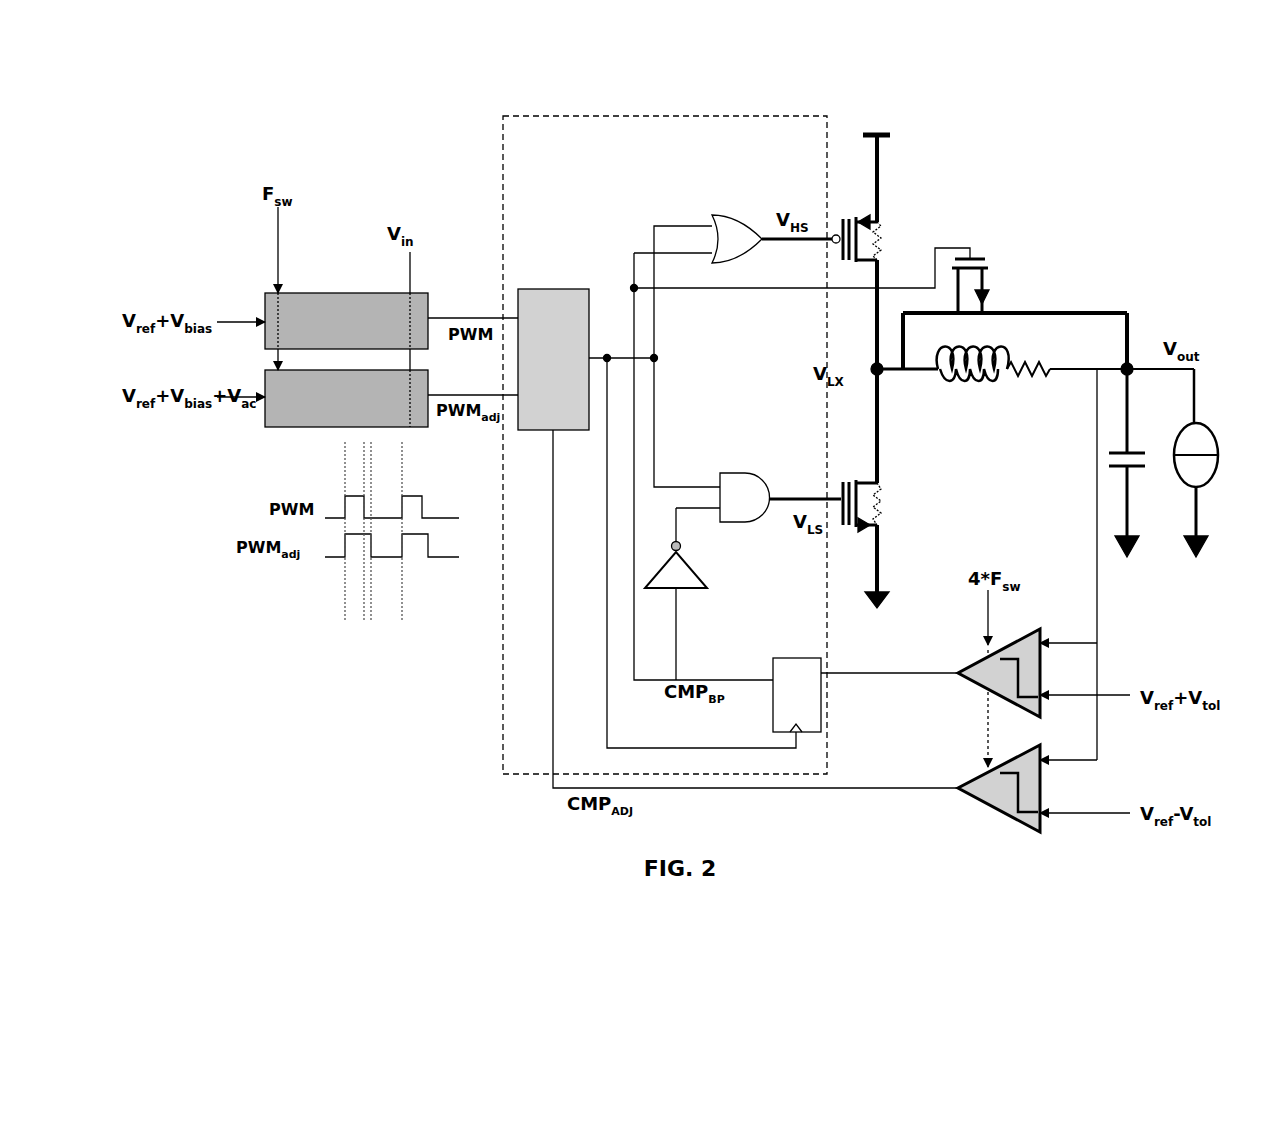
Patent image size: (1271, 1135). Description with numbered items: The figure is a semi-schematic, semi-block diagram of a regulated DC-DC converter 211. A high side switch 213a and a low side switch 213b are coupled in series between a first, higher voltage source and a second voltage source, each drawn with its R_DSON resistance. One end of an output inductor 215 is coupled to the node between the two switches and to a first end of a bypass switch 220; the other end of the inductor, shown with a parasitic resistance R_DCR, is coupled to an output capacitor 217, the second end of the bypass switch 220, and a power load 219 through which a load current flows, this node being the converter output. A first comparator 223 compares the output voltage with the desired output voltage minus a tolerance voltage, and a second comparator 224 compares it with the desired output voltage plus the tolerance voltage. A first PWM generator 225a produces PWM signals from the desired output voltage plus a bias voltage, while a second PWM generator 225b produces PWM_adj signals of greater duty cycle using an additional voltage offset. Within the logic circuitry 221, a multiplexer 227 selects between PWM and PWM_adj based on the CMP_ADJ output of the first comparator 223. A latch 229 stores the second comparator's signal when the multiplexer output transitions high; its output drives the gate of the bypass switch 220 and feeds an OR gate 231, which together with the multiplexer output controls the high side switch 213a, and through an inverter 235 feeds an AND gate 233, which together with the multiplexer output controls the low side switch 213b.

The converter 211 is at (920, 110).
The high side switch 213a is at (853, 217).
The low side switch 213b is at (850, 480).
The output inductor 215 is at (1002, 395).
The output capacitor 217 is at (1115, 468).
The power load 219 is at (1204, 423).
The bypass switch 220 is at (980, 257).
The logic circuitry 221 is at (503, 774).
The first comparator 223 is at (987, 807).
The second comparator 224 is at (1012, 642).
The first pulse-width modulation generator 225a is at (292, 292).
The second PWM generator 225b is at (288, 428).
The multiplexer 227 is at (553, 287).
The latch 229 is at (787, 657).
The OR gate 231 is at (740, 262).
The AND gate 233 is at (738, 473).
The inverter 235 is at (695, 575).